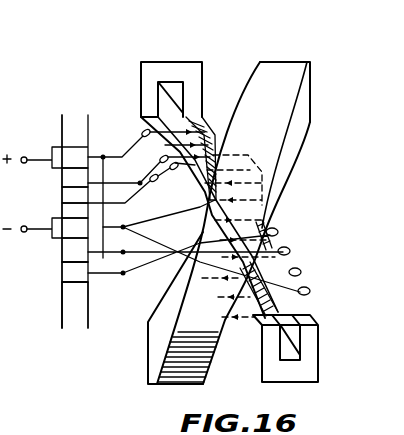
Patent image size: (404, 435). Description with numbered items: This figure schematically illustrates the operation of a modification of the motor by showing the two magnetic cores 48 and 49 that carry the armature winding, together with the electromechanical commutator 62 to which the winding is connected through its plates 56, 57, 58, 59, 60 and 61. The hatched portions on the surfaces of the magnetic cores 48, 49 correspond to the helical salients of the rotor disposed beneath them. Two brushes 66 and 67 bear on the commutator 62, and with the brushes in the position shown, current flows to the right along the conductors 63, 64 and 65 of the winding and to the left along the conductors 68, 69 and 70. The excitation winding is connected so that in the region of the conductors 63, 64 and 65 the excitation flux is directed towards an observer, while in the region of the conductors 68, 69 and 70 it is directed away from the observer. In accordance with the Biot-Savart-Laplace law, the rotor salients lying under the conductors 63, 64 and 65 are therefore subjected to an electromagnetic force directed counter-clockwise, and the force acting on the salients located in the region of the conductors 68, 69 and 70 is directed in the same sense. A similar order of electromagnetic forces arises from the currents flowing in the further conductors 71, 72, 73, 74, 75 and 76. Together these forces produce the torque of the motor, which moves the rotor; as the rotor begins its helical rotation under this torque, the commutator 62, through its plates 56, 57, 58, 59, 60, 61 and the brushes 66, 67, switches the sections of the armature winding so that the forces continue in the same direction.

The magnetic core 48 is at (168, 70).
The magnetic core 49 is at (284, 72).
The commutator plate 56 is at (88, 148).
The commutator plate 57 is at (62, 182).
The commutator plate 58 is at (62, 207).
The commutator plate 59 is at (66, 255).
The commutator plate 60 is at (62, 285).
The commutator plate 61 is at (85, 278).
The electromechanical commutator 62 is at (61, 128).
The conductor of the winding 63 is at (142, 131).
The conductor of the winding 64 is at (143, 138).
The conductor of the winding 65 is at (150, 171).
The brush 66 is at (52, 150).
The brush 67 is at (57, 235).
The conductor of the winding 68 is at (167, 178).
The conductor of the winding 69 is at (197, 177).
The conductor of the winding 70 is at (190, 213).
The conductor 71 is at (172, 278).
The conductor 72 is at (278, 228).
The conductor 73 is at (289, 246).
The conductor 74 is at (302, 272).
The conductor 75 is at (311, 291).
The conductor 76 is at (315, 313).